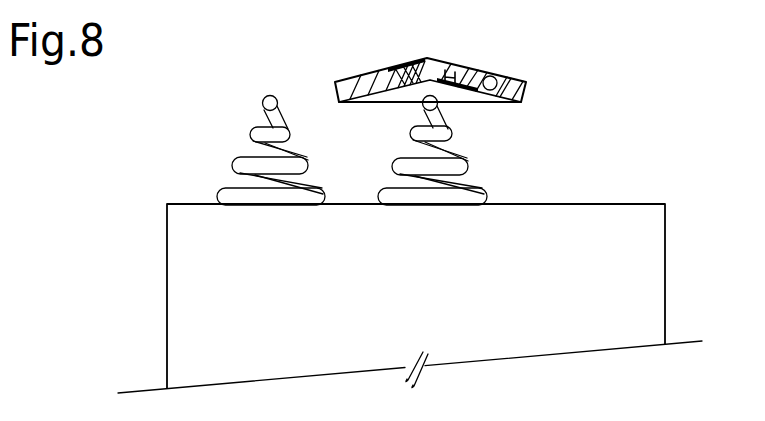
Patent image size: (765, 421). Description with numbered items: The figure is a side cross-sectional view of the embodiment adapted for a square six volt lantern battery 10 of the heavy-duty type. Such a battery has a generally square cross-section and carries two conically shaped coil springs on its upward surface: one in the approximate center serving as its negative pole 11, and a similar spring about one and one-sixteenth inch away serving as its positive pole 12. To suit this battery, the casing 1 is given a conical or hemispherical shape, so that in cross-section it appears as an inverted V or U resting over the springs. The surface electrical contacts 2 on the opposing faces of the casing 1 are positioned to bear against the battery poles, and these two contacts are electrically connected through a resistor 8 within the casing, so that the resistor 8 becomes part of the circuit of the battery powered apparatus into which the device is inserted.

The casing 1 is at (458, 77).
The surface electrical contacts 2 is at (402, 60).
The resistor 8 is at (497, 83).
The 6 volt lantern battery 10 is at (188, 272).
The negative pole 11 is at (482, 196).
The positive pole 12 is at (254, 134).